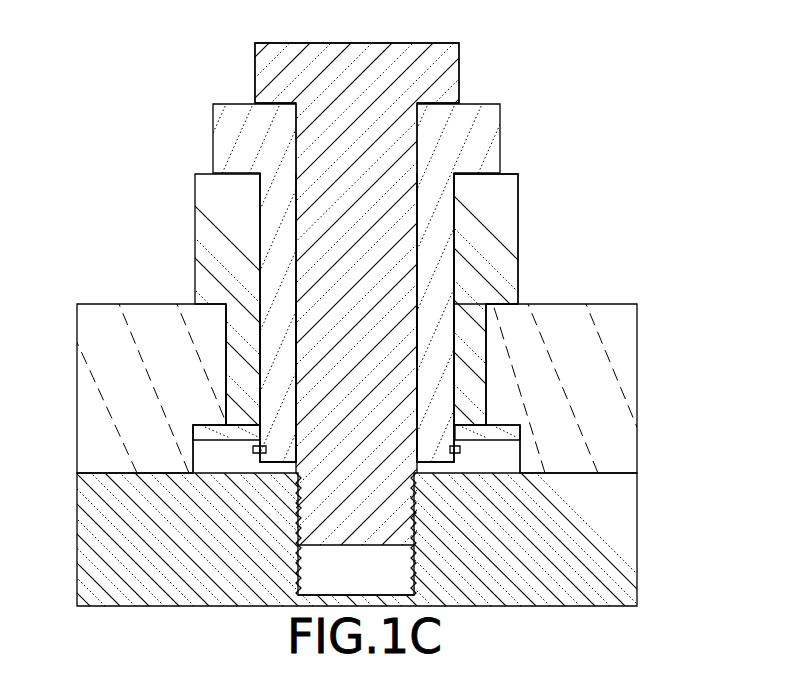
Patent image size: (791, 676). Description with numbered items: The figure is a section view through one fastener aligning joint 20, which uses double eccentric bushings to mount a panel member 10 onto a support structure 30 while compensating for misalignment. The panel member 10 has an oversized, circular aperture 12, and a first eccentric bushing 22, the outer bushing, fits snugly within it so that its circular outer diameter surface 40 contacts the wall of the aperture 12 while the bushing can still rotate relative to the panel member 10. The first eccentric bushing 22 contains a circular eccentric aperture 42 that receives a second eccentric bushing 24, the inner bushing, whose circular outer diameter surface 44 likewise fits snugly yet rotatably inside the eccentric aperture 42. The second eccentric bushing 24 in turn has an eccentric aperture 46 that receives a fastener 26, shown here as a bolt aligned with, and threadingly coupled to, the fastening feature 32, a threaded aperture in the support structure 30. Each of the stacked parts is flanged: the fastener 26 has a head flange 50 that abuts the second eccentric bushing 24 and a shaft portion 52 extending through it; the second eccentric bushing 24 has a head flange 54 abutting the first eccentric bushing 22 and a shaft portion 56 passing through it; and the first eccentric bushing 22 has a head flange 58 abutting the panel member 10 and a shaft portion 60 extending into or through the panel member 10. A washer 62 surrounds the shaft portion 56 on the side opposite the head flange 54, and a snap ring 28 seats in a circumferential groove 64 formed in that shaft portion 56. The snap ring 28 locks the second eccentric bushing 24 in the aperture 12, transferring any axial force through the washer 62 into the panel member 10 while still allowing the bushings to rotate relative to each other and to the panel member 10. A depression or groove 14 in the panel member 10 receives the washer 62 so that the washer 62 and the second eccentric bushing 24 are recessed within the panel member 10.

The panel member 10 is at (147, 440).
The aperture 12 is at (480, 390).
The depression or groove 14 is at (513, 450).
The fastener aligning joint 20 is at (603, 53).
The first eccentric bushing 22 is at (503, 202).
The second eccentric bushing 24 is at (487, 118).
The fastener 26 is at (378, 48).
The snap ring 28 is at (455, 453).
The support structure 30 is at (88, 548).
The fastening feature 32 is at (412, 563).
The outer diameter surface 40 is at (228, 372).
The eccentric aperture 42 is at (262, 353).
The outer diameter surface 44 is at (455, 258).
The eccentric aperture 46 is at (417, 228).
The head flange 50 is at (459, 56).
The shaft portion 52 is at (415, 335).
The head flange 54 is at (225, 144).
The shaft portion 56 is at (270, 280).
The head flange 58 is at (208, 229).
The shaft portion 60 is at (225, 318).
The washer 62 is at (227, 437).
The circumferential groove 64 is at (450, 447).